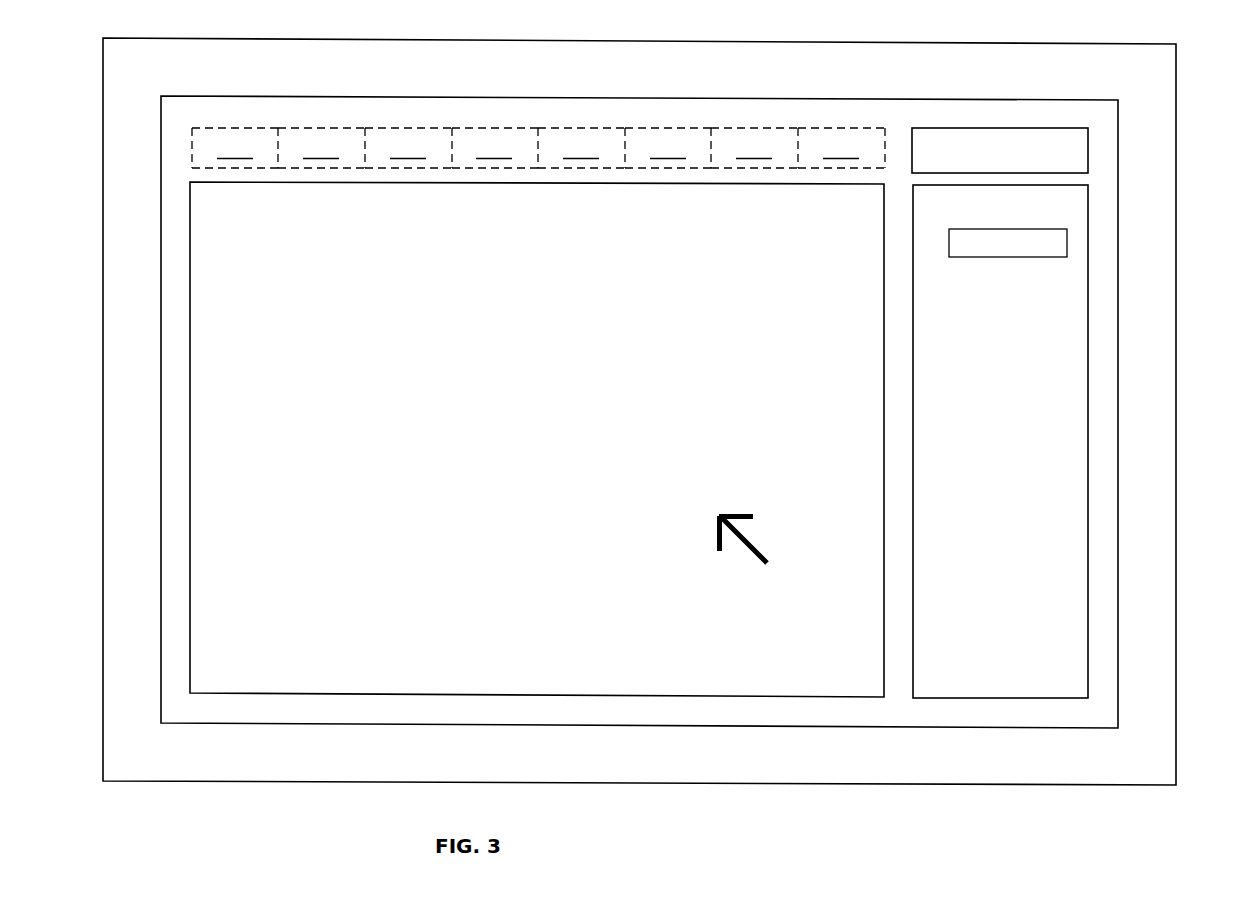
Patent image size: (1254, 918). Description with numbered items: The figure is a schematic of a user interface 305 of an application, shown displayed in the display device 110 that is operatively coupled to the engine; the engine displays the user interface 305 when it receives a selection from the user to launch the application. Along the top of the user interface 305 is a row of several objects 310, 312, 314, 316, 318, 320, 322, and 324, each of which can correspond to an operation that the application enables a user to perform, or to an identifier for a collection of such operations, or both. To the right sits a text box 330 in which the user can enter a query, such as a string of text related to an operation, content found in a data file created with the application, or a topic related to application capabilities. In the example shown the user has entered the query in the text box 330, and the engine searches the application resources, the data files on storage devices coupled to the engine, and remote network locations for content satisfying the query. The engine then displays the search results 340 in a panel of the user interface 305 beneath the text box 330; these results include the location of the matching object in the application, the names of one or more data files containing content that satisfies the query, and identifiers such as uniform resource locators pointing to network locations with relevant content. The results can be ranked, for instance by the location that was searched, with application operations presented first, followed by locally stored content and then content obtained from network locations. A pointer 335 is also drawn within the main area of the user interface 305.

The display device 110 is at (639, 445).
The user interface 305 is at (647, 474).
The object 310 is at (235, 148).
The object 312 is at (321, 148).
The object 314 is at (408, 148).
The object 316 is at (495, 148).
The object 318 is at (581, 148).
The object 320 is at (668, 148).
The object 322 is at (754, 148).
The object 324 is at (841, 148).
The text box 330 is at (1088, 152).
The cursor 335 is at (767, 564).
The search results 340 is at (1088, 313).